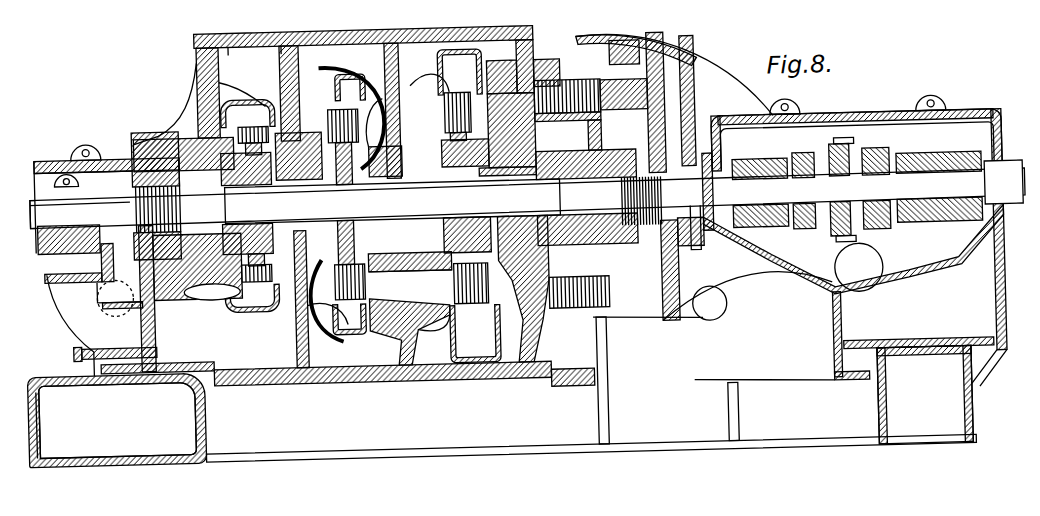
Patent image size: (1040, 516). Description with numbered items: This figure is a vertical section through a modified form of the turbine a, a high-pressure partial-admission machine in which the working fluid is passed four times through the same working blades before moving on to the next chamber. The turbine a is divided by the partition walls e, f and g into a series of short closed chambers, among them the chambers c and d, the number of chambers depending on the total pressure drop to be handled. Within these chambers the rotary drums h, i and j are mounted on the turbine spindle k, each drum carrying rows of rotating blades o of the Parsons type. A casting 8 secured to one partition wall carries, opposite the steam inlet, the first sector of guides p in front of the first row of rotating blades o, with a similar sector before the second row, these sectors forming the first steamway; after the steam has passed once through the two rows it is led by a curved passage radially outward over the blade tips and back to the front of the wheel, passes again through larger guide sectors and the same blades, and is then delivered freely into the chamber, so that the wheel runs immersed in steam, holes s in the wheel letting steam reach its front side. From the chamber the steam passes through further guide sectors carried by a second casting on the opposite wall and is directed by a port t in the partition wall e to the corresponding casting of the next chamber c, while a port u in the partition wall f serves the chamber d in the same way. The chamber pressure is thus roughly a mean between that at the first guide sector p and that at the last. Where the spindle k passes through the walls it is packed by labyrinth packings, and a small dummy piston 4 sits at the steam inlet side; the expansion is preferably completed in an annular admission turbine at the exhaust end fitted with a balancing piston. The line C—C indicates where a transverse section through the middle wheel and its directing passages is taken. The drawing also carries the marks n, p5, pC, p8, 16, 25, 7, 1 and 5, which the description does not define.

The turbine a is at (505, 38).
The partition wall e is at (293, 40).
The chamber c is at (390, 40).
The partition wall f is at (397, 40).
The blade shroud cap n is at (252, 93).
The guide blades p is at (240, 40).
The blade row p5 is at (460, 90).
The blade cap pC is at (345, 70).
The blade row p8 is at (255, 306).
The partition wall g is at (548, 62).
The rotary drum j is at (516, 150).
The turbine spindle k is at (565, 190).
The diaphragm wall 25 is at (633, 100).
The shaft 7 is at (508, 200).
The dummy piston 4 is at (205, 180).
The rotary drum h is at (258, 176).
The chamber d is at (418, 172).
The rotary drum i is at (352, 176).
The holes s is at (200, 110).
The port t is at (265, 92).
The casing wall 16 is at (193, 85).
The rotating blades o is at (425, 300).
The section line C— C is at (350, 331).
The nozzle 1 is at (372, 330).
The port u is at (434, 335).
The casting 8 is at (524, 288).
The bearing bracket 5 is at (708, 158).